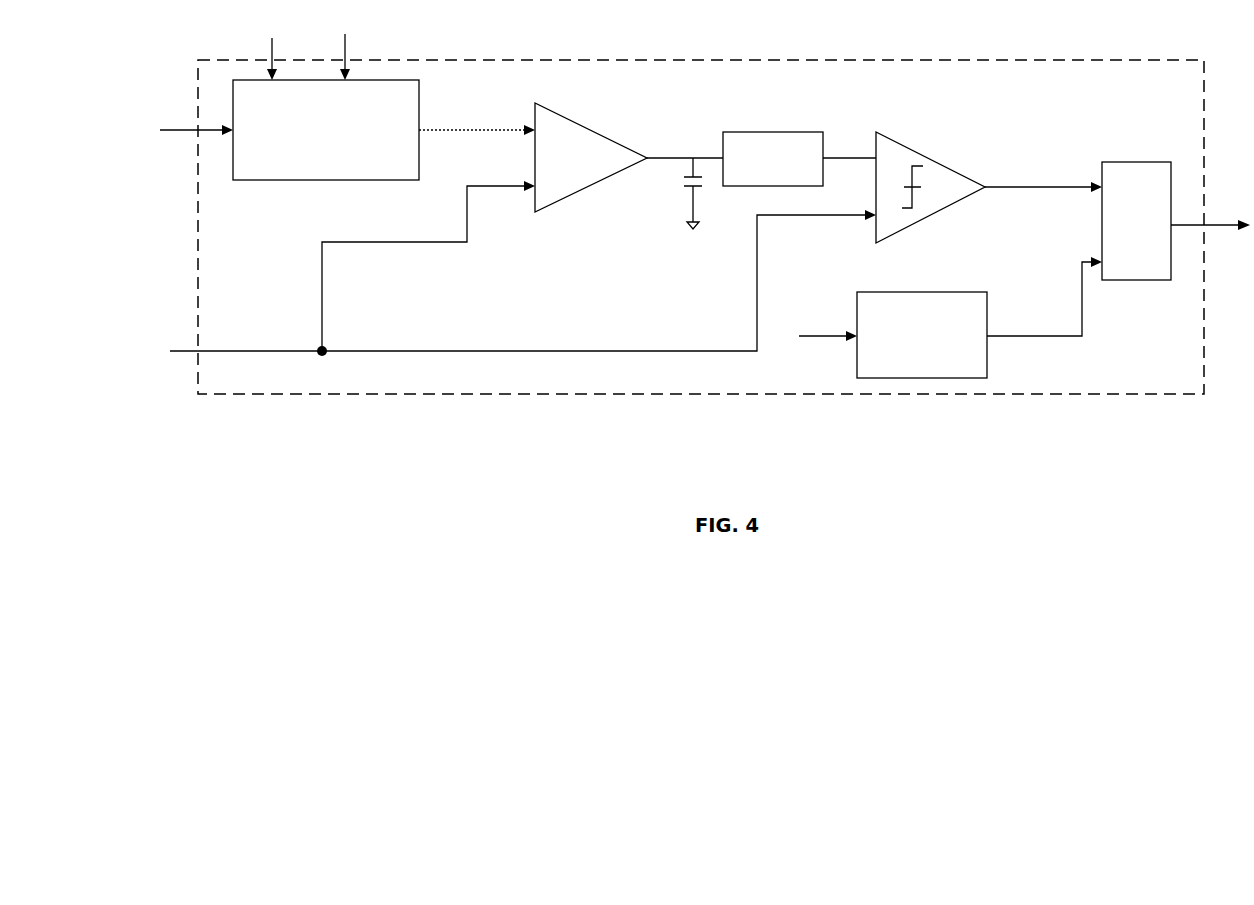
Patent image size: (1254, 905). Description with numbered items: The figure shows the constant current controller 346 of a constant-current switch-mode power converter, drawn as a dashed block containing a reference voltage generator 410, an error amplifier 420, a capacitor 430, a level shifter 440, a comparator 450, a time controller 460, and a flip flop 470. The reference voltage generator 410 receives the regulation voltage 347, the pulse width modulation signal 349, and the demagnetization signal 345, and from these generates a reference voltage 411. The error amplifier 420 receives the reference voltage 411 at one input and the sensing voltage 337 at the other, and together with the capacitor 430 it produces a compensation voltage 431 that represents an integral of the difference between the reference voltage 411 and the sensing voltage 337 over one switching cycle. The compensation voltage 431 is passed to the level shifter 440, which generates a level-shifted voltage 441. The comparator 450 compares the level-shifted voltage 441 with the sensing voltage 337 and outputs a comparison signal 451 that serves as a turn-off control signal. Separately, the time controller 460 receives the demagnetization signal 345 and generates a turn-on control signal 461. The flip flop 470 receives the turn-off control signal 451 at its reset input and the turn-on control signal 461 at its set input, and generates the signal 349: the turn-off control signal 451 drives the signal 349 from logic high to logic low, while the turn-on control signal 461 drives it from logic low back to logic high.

The constant current controller 346 is at (1090, 395).
The reference voltage generator 410 is at (298, 180).
The regulation voltage 347 is at (174, 131).
The signal 349 is at (290, 28).
The demagnetization signal 345 is at (360, 35).
The reference voltage 411 is at (452, 132).
The error amplifier 420 is at (578, 196).
The compensation voltage 431 is at (705, 156).
The capacitor 430 is at (690, 189).
The level shifter 440 is at (764, 132).
The level-shifted voltage 441 is at (846, 157).
The comparator 450 is at (944, 162).
The comparison signal 451 is at (1078, 185).
The flip flop 470 is at (1136, 162).
The time controller 460 is at (969, 292).
The turn-on control signal 461 is at (1084, 322).
The sensing voltage 337 is at (183, 335).